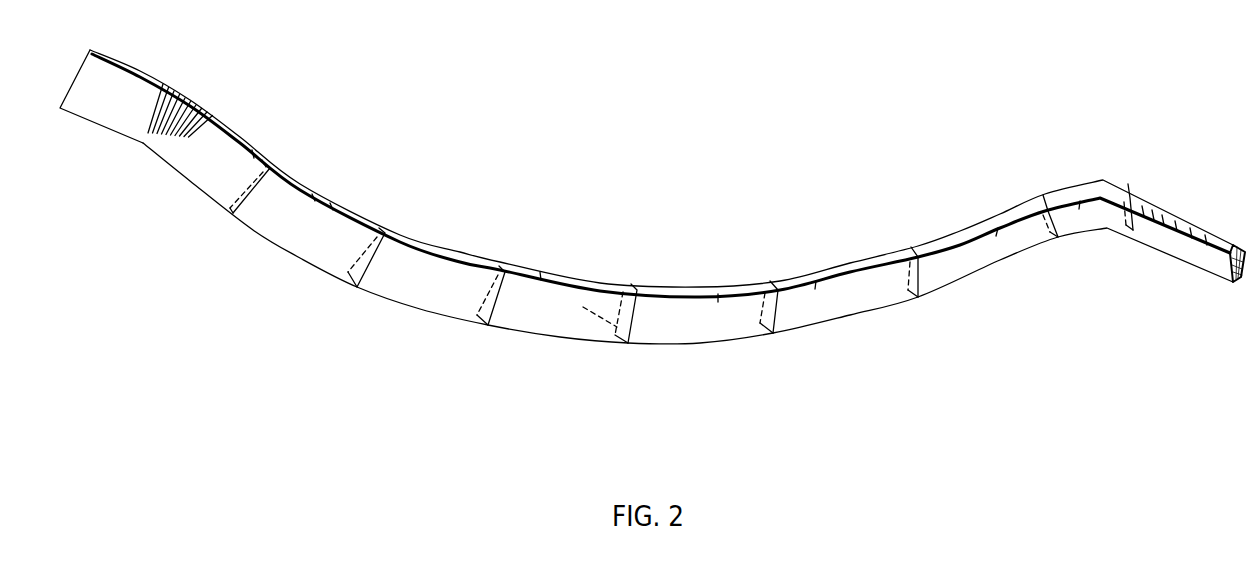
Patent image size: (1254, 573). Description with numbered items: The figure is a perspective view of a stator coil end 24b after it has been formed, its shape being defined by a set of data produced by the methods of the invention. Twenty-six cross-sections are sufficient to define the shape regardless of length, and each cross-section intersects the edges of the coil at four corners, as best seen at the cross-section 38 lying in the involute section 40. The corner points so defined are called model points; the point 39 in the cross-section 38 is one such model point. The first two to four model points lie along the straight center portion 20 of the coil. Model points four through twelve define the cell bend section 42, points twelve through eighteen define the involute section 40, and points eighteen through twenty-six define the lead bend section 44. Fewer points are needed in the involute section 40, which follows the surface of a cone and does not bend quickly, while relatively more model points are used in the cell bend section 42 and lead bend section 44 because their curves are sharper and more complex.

The straight center portion 20 is at (140, 145).
The stator coil end 24b is at (1237, 288).
The cross-section 38 is at (640, 320).
The model point 39 is at (583, 307).
The involute section 40 is at (1045, 193).
The cell bend section 42 is at (225, 115).
The lead bend section 44 is at (1237, 243).